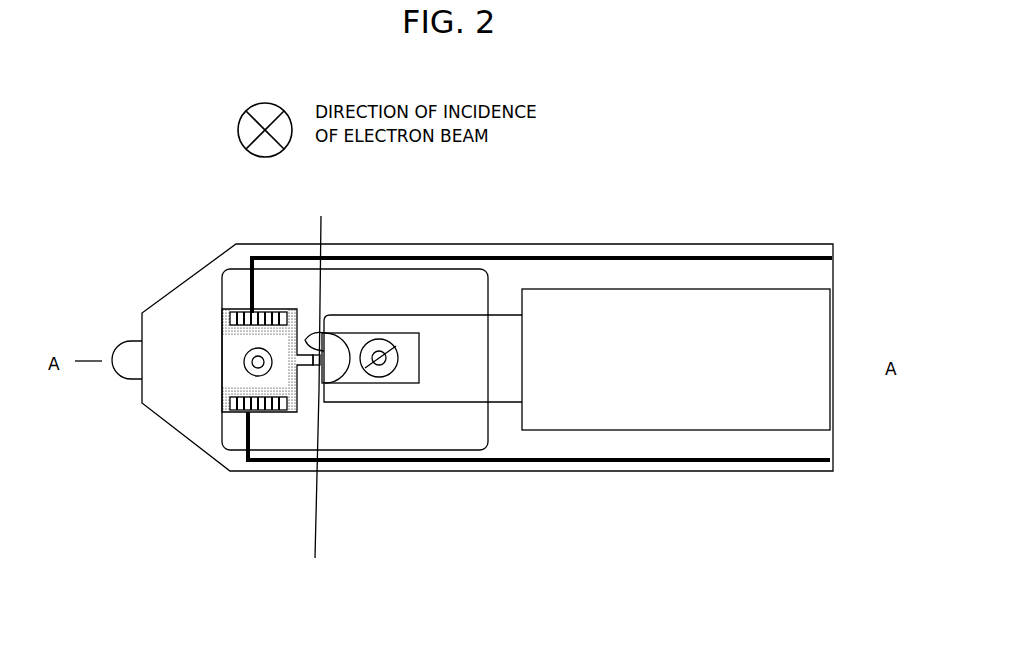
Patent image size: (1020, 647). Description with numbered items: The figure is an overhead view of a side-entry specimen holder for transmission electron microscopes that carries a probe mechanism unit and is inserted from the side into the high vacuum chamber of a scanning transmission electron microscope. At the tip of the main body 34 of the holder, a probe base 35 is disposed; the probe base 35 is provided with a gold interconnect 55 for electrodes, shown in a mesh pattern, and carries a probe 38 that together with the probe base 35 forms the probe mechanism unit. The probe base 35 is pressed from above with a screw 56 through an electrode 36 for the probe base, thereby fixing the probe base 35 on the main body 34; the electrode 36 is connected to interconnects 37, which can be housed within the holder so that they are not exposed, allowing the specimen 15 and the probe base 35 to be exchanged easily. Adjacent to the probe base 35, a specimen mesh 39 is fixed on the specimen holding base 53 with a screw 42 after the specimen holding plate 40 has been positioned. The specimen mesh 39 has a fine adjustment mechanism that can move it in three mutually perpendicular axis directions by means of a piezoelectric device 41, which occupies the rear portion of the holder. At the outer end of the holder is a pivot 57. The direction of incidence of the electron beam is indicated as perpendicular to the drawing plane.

The specimen 15 is at (323, 355).
The main body 34 is at (193, 432).
The probe base 35 is at (287, 412).
The electrode for the probe base 36 is at (243, 309).
The interconnects 37 is at (375, 258).
The probe 38 is at (311, 467).
The specimen mesh 39 is at (318, 294).
The specimen holding plate 40 is at (407, 383).
The piezoelectric device 41 is at (556, 397).
The screw 42 is at (377, 377).
The specimen holding base 53 is at (503, 322).
The gold interconnect 55 is at (230, 328).
The screw 56 is at (268, 351).
The pivot 57 is at (130, 338).